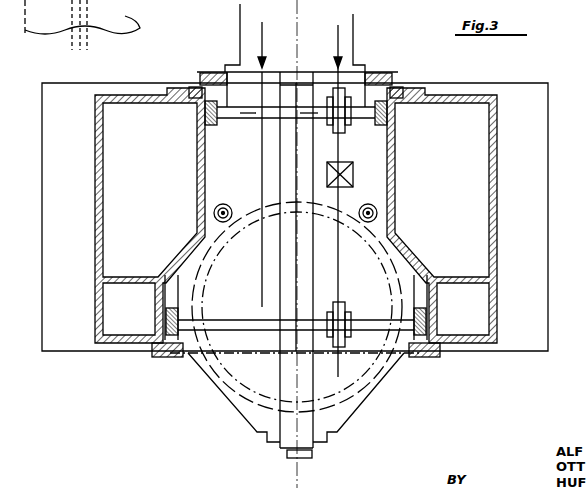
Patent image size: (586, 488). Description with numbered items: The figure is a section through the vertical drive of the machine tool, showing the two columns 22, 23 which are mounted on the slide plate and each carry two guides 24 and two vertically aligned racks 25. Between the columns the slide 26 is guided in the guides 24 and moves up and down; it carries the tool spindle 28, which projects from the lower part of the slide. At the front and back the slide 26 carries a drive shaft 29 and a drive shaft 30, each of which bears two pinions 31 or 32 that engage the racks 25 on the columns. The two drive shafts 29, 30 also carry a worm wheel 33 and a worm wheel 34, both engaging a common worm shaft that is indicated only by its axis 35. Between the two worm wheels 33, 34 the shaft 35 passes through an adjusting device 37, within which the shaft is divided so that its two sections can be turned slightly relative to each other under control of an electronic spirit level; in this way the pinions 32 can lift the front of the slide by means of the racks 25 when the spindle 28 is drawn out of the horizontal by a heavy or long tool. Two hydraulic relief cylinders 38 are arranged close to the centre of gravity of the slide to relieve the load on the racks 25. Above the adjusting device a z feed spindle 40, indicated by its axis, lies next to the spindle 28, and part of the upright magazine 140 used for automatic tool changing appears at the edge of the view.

The column 22 is at (96, 200).
The column 23 is at (497, 212).
The guide 24 is at (205, 122).
The rack 25 is at (212, 74).
The slide 26 is at (296, 244).
The tool spindle 28 is at (287, 456).
The drive shaft 29 is at (263, 333).
The drive shaft 30 is at (264, 105).
The pinion 31 is at (296, 129).
The pinion 32 is at (296, 315).
The worm wheel 33 is at (330, 130).
The worm wheel 34 is at (335, 346).
The worm shaft 35 is at (352, 213).
The adjusting device 37 is at (353, 175).
The hydraulic relief cylinder 38 is at (230, 207).
The z feed spindle 40 is at (261, 40).
The upright magazine 140 is at (101, 25).